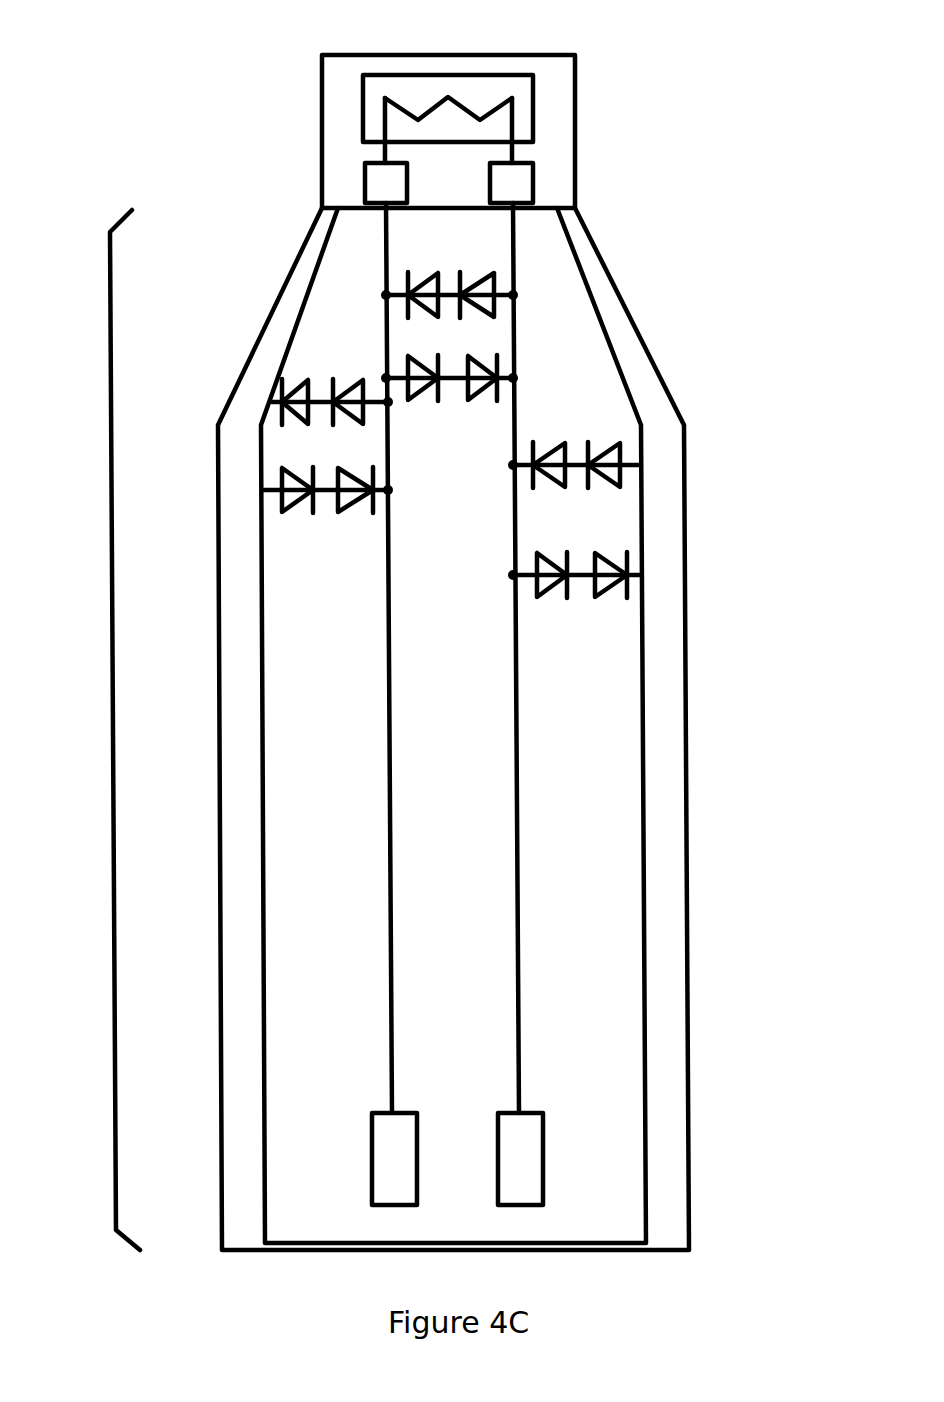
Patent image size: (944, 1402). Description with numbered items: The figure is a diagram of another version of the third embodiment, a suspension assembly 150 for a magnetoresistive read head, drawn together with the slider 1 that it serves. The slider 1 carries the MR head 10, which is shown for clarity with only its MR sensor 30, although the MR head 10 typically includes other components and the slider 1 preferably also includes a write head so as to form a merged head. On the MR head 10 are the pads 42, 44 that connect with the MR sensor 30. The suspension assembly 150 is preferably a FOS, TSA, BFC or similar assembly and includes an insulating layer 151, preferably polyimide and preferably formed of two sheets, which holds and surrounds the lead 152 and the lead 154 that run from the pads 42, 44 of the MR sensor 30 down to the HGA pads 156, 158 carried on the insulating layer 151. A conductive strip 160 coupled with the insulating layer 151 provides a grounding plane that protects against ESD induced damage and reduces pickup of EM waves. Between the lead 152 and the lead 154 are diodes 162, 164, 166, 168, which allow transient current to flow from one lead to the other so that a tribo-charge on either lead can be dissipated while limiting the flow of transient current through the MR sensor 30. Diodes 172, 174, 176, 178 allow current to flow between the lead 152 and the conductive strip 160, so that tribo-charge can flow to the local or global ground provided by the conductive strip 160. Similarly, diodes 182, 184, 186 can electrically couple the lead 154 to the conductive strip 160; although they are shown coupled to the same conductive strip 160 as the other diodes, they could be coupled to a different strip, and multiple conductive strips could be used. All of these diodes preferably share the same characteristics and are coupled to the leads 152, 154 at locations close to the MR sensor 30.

The slider 1 is at (576, 87).
The MR head 10 is at (447, 75).
The MR sensor 30 is at (363, 118).
The pad 42 is at (365, 185).
The pad 44 is at (533, 183).
The suspension assembly 150 is at (113, 732).
The insulating layer 151 is at (645, 1068).
The lead 152 is at (390, 750).
The lead 154 is at (518, 877).
The HGA pad 156 is at (372, 1160).
The HGA pad 158 is at (543, 1160).
The conductive strip 160 is at (222, 967).
The diode 162 is at (440, 272).
The diode 164 is at (496, 272).
The diode 166 is at (408, 400).
The diode 168 is at (468, 357).
The diode 172 is at (308, 380).
The diode 174 is at (365, 387).
The diode 176 is at (283, 468).
The diode 178 is at (340, 514).
The diode 182 is at (553, 480).
The diode 184 is at (608, 487).
The diode 186 is at (540, 597).